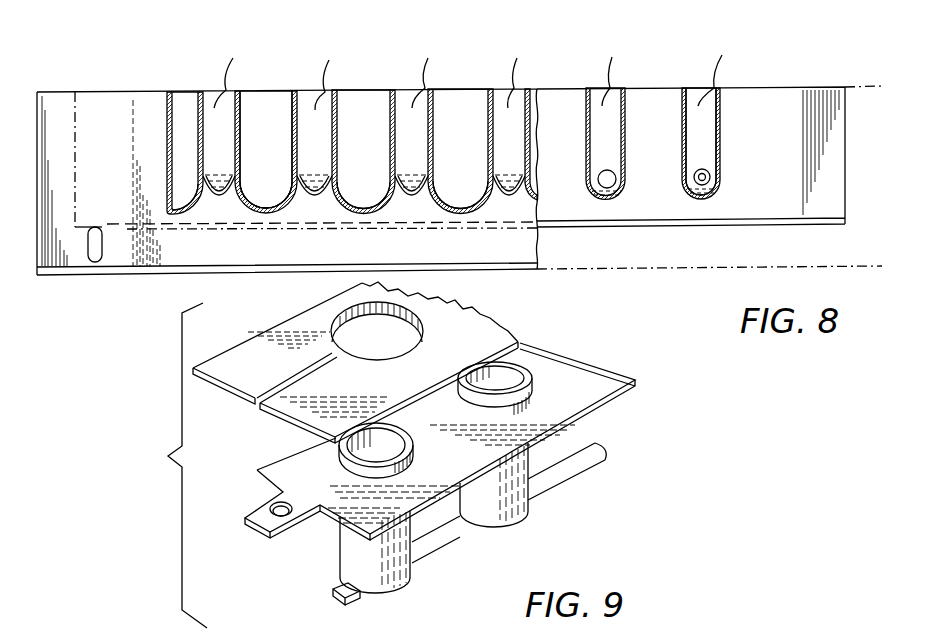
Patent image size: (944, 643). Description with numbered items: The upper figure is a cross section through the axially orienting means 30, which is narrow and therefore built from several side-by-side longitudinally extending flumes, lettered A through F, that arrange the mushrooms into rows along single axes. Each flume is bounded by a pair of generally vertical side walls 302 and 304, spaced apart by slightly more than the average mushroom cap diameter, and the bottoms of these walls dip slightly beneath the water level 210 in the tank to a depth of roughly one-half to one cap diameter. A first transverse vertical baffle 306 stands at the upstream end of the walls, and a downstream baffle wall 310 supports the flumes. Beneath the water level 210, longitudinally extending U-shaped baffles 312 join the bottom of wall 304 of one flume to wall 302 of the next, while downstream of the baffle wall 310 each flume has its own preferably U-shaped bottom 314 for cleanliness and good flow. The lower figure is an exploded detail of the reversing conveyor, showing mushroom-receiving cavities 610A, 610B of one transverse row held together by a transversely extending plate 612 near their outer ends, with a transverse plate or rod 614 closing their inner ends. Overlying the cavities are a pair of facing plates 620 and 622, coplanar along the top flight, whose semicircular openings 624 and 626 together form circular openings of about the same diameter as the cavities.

In FIG. 8, the axially orienting means 30 is at (669, 53).
In FIG. 8, the side wall 302 is at (682, 133).
In FIG. 8, the side wall 304 is at (292, 152).
In FIG. 8, the first transverse vertical baffle 306 is at (143, 250).
In FIG. 8, the baffle wall 310 is at (135, 135).
In FIG. 8, the U-shaped baffle 312 is at (182, 214).
In FIG. 8, the flume bottom 314 is at (219, 202).
In FIG. 8, the water level 210 is at (503, 168).
In FIG. 9, the transversely extending plate 612 is at (302, 460).
In FIG. 9, the transversely extending plate or rod 614 is at (577, 462).
In FIG. 9, the facing plate 620 is at (470, 330).
In FIG. 9, the facing plate 622 is at (258, 352).
In FIG. 9, the semicircular opening 624 is at (378, 354).
In FIG. 9, the semicircular opening 626 is at (371, 316).
In FIG. 9, the mushroom-receiving cavity 610A is at (390, 572).
In FIG. 9, the mushroom-receiving cavity 610B is at (513, 507).